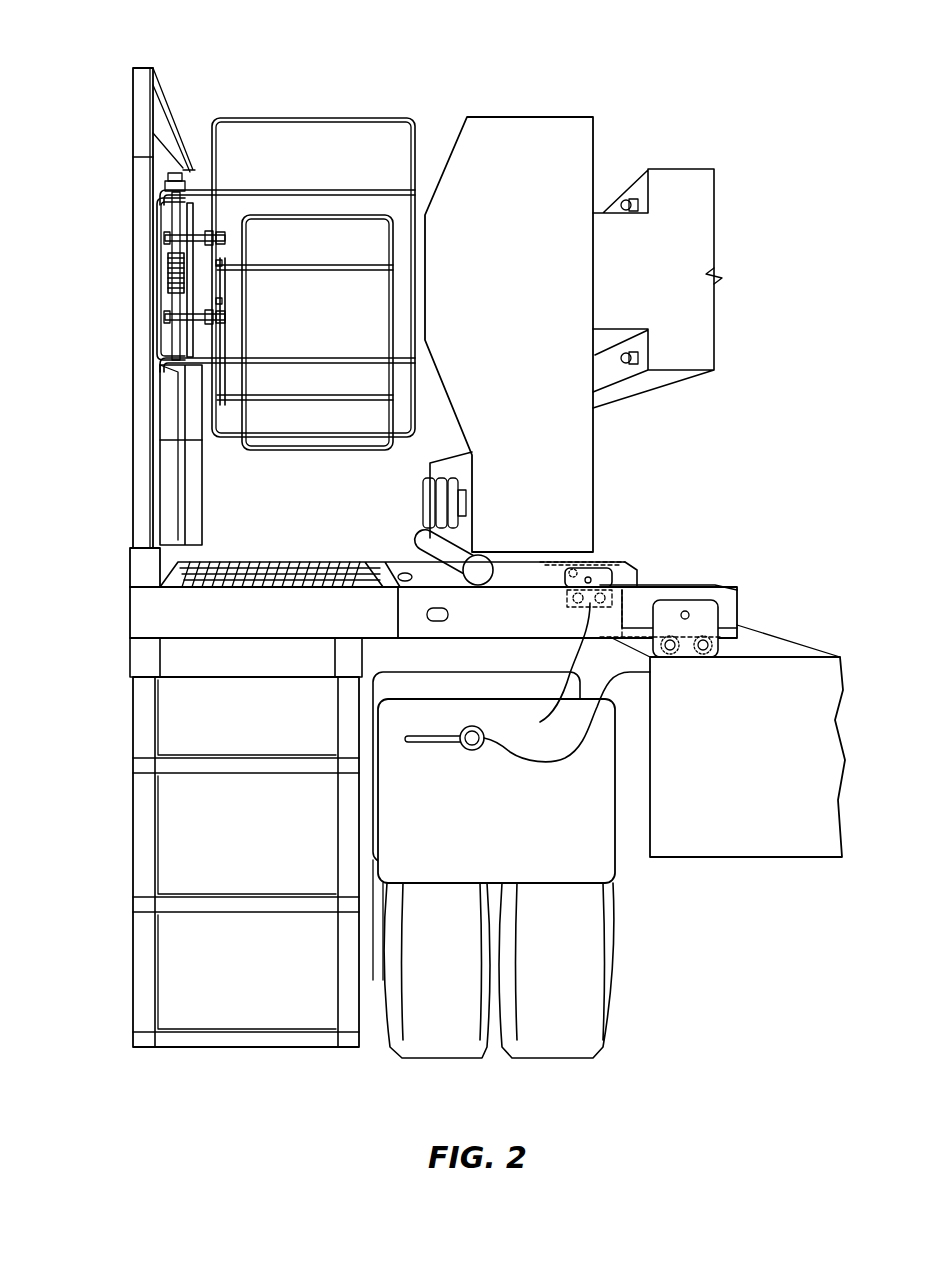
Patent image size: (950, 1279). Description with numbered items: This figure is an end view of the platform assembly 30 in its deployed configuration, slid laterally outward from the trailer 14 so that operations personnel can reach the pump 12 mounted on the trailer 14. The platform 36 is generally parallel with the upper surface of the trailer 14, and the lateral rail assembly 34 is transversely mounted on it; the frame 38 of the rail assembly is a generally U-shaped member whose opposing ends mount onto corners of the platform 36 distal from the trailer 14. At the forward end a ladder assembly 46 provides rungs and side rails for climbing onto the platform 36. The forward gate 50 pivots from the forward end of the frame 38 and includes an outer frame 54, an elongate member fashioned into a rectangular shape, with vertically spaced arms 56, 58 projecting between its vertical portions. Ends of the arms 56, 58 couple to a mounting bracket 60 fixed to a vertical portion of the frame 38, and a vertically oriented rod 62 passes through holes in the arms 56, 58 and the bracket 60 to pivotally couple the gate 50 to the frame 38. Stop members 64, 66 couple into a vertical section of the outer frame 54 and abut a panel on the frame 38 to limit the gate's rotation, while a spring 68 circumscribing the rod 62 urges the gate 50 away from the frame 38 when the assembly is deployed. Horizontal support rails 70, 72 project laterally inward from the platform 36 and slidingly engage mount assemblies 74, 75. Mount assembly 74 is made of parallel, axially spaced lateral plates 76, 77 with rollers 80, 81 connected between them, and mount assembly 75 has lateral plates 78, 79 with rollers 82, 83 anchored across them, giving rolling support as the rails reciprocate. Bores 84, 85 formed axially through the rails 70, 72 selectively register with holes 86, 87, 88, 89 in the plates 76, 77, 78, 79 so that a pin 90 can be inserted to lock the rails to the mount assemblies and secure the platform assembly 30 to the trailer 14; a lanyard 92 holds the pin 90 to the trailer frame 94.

The pump 12 is at (537, 125).
The trailer 14 is at (662, 898).
The platform assembly 30 is at (120, 50).
The lateral rail assembly 34 is at (118, 436).
The platform 36 is at (130, 622).
The frame 38 is at (138, 510).
The ladder assembly 46 is at (118, 823).
The forward gate 50 is at (322, 98).
The outer frame 54 is at (300, 438).
The longitudinally extending arm 56 is at (312, 190).
The longitudinally extending arm 58 is at (287, 358).
The mounting bracket 60 is at (157, 210).
The rod 62 is at (177, 330).
The stop member 64 is at (200, 307).
The stop member 66 is at (200, 232).
The spring 68 is at (176, 270).
The support rail 70 is at (408, 560).
The support rail 72 is at (412, 556).
The mount assembly 74 is at (752, 640).
The mount assembly 75 is at (573, 540).
The lateral plate 76 is at (720, 613).
The lateral plate 77 is at (540, 722).
The lateral plate 78 is at (600, 595).
The lateral plate 79 is at (550, 573).
The roller 80 is at (672, 652).
The roller 81 is at (705, 652).
The roller 82 is at (567, 597).
The roller 83 is at (590, 603).
The bore 84 is at (426, 614).
The bore 85 is at (412, 572).
The hole 86 is at (689, 613).
The hole 87 is at (655, 598).
The hole 88 is at (578, 574).
The hole 89 is at (590, 582).
The pin 90 is at (437, 742).
The lanyard 92 is at (577, 762).
The trailer frame 94 is at (762, 848).